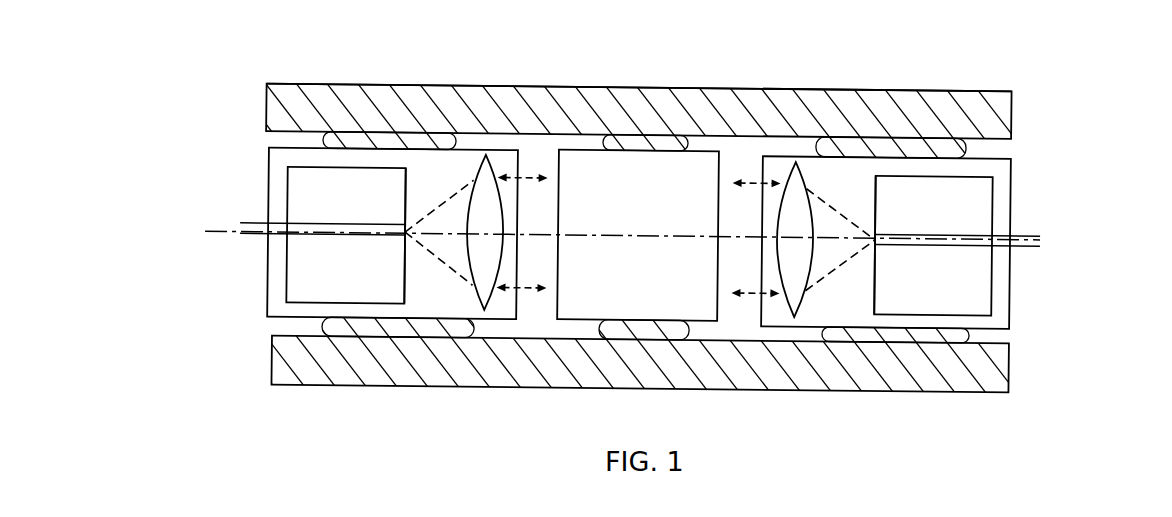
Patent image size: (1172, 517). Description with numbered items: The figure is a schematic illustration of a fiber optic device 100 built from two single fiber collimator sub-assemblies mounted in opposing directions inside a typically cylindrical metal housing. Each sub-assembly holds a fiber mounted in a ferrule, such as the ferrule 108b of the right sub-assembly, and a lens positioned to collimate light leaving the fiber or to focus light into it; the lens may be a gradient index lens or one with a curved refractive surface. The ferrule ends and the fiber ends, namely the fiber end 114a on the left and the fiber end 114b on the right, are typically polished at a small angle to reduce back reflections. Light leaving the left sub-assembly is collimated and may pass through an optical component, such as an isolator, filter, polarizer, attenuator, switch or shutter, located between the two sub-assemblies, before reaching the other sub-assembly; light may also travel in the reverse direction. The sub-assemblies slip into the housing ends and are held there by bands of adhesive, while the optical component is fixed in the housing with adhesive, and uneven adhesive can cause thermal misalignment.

The fiber optic device 100 is at (127, 72).
The ferrule 108b is at (933, 246).
The fiber end 114a is at (407, 236).
The fiber end 114b is at (873, 241).